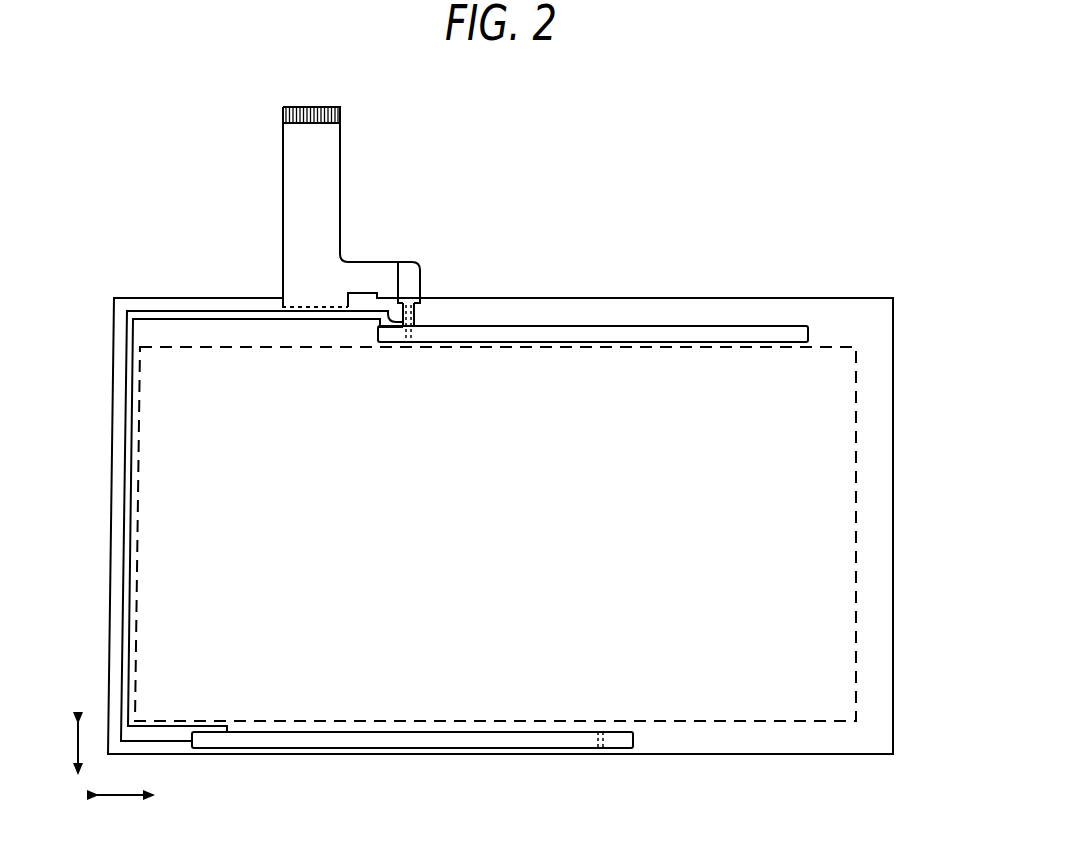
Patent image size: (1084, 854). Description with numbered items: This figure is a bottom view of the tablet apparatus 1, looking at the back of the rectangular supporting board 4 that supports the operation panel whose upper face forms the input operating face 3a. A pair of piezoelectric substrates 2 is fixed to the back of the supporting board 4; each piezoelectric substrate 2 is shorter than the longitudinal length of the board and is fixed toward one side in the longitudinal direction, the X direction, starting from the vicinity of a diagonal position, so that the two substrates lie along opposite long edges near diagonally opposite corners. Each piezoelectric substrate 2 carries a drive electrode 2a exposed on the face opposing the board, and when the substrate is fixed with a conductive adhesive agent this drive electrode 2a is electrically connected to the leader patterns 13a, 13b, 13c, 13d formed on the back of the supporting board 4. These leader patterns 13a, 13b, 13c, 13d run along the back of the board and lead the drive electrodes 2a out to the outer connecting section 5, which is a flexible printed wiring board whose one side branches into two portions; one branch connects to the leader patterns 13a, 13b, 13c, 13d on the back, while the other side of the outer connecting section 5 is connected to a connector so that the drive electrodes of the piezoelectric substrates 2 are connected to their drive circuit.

The tablet apparatus 1 is at (742, 211).
The piezoelectric substrate 2 is at (567, 333).
The drive electrode 2a is at (500, 524).
The input operating face 3a is at (826, 591).
The supporting board 4 is at (872, 392).
The outer connecting section 5 is at (322, 165).
The leader pattern 13a is at (165, 310).
The leader pattern 13b is at (208, 318).
The leader pattern 13c is at (398, 302).
The leader pattern 13d is at (415, 318).